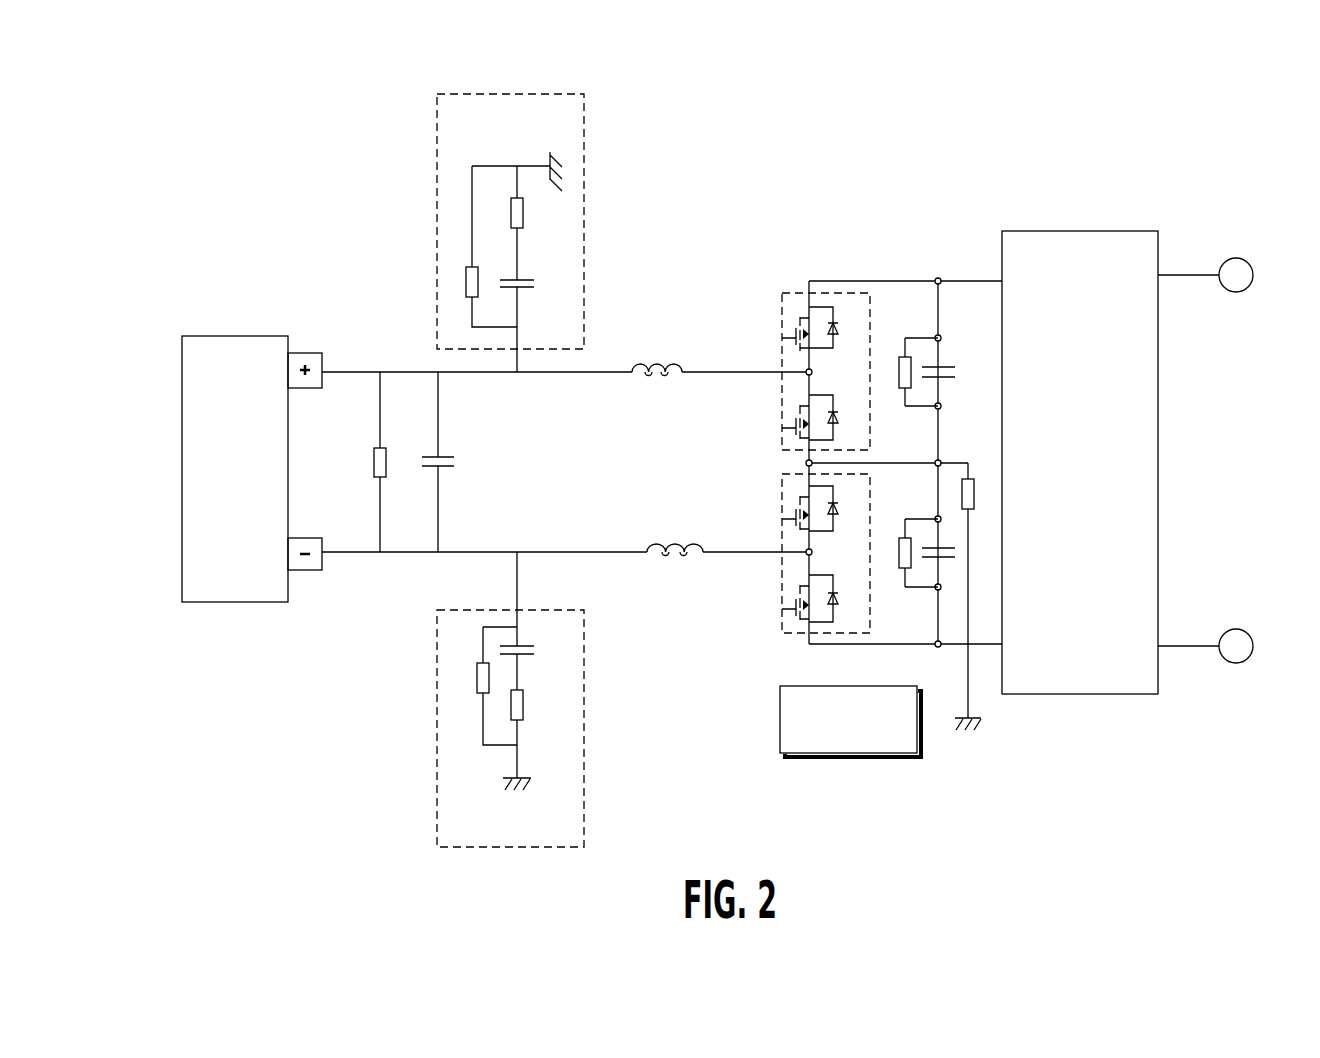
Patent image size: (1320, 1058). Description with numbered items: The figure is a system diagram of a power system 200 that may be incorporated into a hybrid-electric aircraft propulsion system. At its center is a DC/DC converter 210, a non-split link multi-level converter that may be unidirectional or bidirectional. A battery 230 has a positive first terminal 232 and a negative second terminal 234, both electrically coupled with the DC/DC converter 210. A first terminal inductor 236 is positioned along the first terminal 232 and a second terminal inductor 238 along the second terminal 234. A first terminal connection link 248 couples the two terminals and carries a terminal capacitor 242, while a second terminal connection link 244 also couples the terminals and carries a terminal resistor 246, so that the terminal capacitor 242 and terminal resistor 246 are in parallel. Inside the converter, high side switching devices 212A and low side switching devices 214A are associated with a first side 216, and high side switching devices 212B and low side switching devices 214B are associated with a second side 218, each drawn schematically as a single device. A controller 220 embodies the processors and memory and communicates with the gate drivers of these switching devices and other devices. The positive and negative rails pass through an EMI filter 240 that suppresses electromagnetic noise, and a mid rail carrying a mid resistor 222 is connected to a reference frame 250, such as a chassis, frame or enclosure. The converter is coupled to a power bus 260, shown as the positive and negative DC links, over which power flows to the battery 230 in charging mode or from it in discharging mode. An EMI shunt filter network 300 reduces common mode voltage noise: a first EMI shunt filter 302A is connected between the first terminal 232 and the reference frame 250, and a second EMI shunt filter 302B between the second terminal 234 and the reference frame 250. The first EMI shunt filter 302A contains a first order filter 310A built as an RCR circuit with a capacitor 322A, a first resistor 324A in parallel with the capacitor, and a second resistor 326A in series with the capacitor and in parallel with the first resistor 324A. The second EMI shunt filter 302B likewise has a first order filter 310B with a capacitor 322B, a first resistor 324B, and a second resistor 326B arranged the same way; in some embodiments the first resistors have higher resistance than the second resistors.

The power system 200 is at (1010, 118).
The DC/DC converter 210 is at (855, 228).
The high side switching devices 212A is at (771, 324).
The low side switching devices 214A is at (771, 413).
The high side switching devices 212B is at (771, 508).
The low side switching devices 214B is at (771, 603).
The first side 216 is at (773, 291).
The second side 218 is at (768, 647).
The controller 220 is at (831, 746).
The mid resistor 222 is at (983, 590).
The battery 230 is at (217, 505).
The first terminal 232 is at (570, 373).
The second terminal 234 is at (603, 551).
The first terminal inductor 236 is at (657, 356).
The second terminal inductor 238 is at (675, 535).
The EMI filter 240 is at (1062, 509).
The terminal capacitor 242 is at (455, 466).
The second terminal connection link 244 is at (379, 512).
The terminal resistor 246 is at (373, 456).
The first terminal connection link 248 is at (439, 522).
The reference frame 250 is at (556, 162).
The power bus 260 is at (1234, 192).
The EMI shunt filter network 300 is at (390, 149).
The first EMI shunt filter 302A is at (457, 93).
The second EMI shunt filter 302B is at (458, 850).
The first order filter 310A is at (560, 228).
The first order filter 310B is at (560, 656).
The capacitor 322A is at (530, 280).
The capacitor 322B is at (526, 645).
The first resistor 324A is at (466, 290).
The first resistor 324B is at (477, 678).
The second resistor 326A is at (510, 212).
The second resistor 326B is at (523, 710).